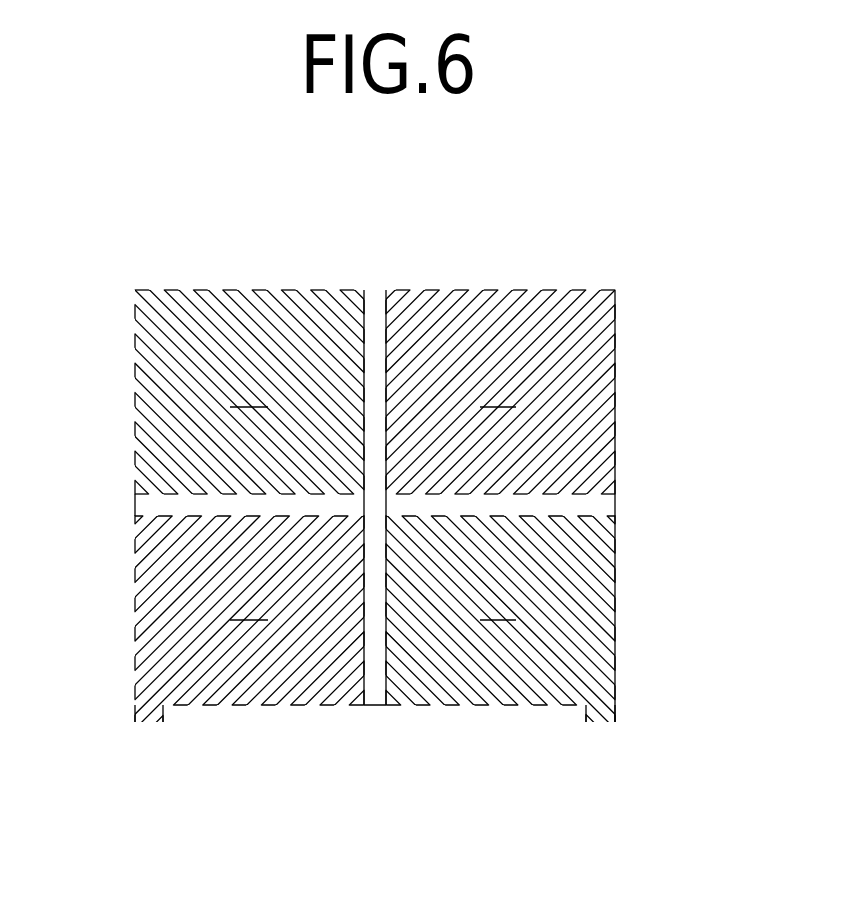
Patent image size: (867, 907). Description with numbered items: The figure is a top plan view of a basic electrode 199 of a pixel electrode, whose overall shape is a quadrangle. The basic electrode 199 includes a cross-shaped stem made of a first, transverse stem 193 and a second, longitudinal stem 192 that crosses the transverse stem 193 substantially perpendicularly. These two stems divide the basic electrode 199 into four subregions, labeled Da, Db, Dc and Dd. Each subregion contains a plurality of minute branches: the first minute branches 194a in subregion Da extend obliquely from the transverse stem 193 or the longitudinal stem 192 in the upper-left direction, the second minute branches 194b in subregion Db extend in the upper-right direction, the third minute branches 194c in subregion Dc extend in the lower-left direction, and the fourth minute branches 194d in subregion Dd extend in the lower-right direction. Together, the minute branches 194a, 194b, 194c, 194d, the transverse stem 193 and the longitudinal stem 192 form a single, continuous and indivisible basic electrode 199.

The longitudinal stem 192 is at (388, 380).
The transverse stem 193 is at (542, 522).
The first minute branch 194a is at (240, 322).
The second minute branch 194b is at (541, 320).
The third minute branch 194c is at (167, 613).
The fourth minute branch 194d is at (540, 672).
The basic electrode 199 is at (433, 436).